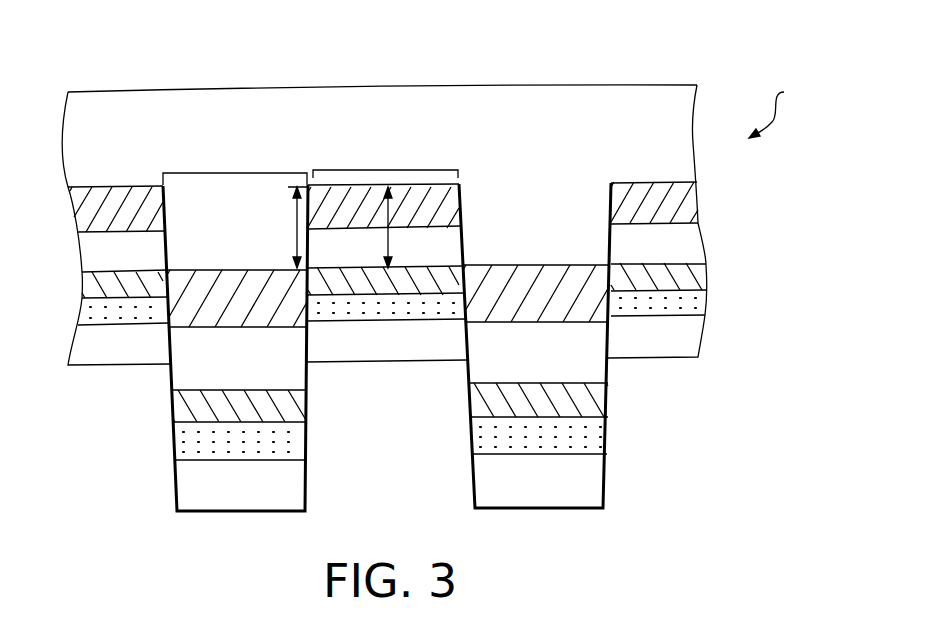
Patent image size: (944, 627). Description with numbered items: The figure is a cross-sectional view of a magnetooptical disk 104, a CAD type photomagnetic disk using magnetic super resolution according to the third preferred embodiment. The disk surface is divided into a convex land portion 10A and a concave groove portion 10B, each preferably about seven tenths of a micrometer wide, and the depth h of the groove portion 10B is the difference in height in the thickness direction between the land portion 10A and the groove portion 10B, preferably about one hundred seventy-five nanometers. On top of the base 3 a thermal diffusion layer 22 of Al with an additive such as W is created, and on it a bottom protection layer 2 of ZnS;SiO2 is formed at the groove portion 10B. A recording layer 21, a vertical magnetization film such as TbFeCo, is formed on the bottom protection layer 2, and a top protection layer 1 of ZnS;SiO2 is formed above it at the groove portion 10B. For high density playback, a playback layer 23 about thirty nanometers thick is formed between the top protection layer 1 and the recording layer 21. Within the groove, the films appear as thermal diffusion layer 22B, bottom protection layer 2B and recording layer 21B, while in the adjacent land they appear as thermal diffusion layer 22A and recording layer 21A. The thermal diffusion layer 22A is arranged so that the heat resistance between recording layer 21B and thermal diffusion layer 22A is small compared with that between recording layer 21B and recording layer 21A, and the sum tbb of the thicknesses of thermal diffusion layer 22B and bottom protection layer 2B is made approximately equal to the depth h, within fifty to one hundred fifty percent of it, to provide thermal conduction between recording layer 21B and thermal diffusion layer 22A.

The top protection layer 1 is at (690, 347).
The bottom protection layer 2 is at (693, 250).
The base 3 is at (673, 142).
The recording layer 21 is at (700, 280).
The thermal diffusion layer 22 is at (700, 203).
The playback layer 23 is at (697, 313).
The bottom protection layer in groove portion 2B is at (443, 237).
The recording layer in groove portion 21B is at (443, 273).
The thermal diffusion layer in groove portion 22B is at (443, 202).
The recording layer in land portion 21A is at (295, 405).
The thermal diffusion layer in land portion 22A is at (208, 285).
The land portion 10A is at (230, 173).
The groove portion 10B is at (385, 170).
The magnetooptical disk 104 is at (793, 107).
The depth of groove portion h is at (292, 227).
The sum of film thicknesses tbb is at (408, 227).